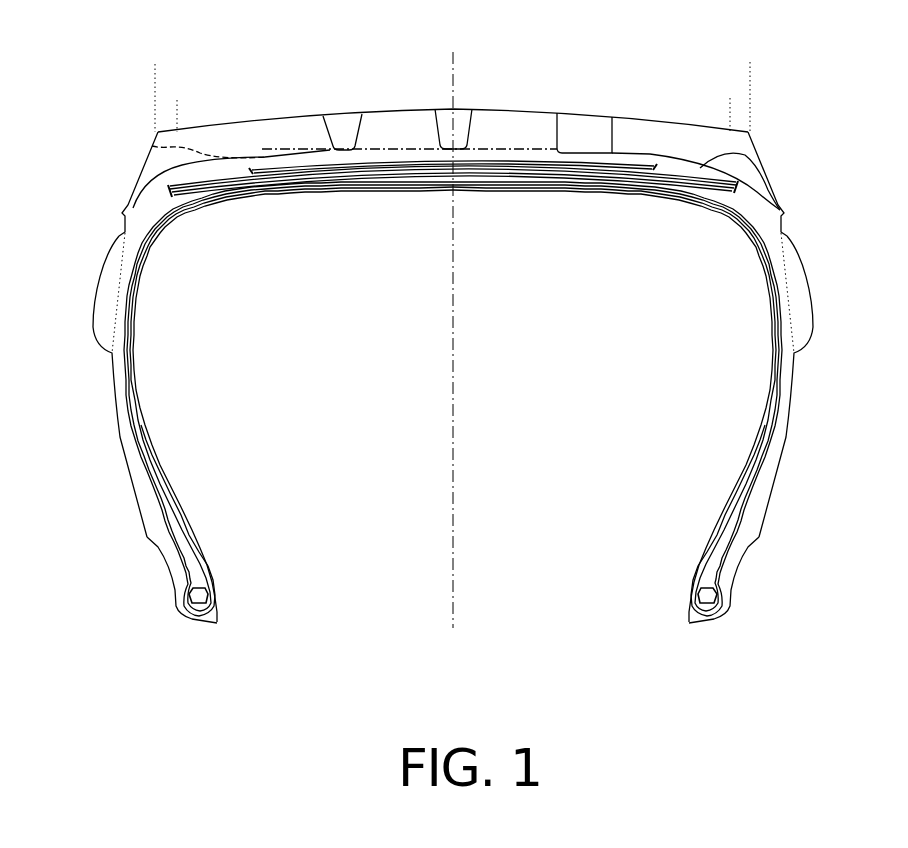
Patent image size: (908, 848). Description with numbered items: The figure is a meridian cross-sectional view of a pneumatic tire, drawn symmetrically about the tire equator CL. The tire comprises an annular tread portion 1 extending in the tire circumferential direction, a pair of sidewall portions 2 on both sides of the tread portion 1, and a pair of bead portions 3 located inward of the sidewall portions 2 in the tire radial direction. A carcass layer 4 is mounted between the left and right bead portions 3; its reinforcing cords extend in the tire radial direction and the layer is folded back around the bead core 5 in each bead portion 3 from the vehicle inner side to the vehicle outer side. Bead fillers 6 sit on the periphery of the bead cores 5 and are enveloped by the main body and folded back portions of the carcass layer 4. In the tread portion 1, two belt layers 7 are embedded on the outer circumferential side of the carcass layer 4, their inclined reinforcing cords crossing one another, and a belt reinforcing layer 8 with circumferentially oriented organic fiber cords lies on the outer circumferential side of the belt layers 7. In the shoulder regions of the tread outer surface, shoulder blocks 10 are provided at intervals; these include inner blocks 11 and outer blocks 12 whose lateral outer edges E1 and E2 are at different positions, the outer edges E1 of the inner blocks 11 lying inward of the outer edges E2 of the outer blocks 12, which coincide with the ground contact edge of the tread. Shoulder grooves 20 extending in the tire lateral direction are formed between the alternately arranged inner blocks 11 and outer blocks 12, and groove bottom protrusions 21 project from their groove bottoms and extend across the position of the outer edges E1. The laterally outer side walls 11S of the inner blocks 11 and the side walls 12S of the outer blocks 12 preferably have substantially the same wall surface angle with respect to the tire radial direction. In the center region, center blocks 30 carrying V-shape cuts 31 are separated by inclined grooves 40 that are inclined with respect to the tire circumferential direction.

The tread portion 1 is at (455, 324).
The sidewall portions 2 is at (802, 373).
The bead portions 3 is at (738, 599).
The carcass layer 4 is at (741, 212).
The bead core 5 is at (708, 593).
The bead fillers 6 is at (722, 536).
The belt layers 7 is at (537, 168).
The belt reinforcing layer 8 is at (652, 170).
The shoulder blocks 10 is at (486, 151).
The inner blocks 11 is at (690, 118).
The outer blocks 12 is at (748, 120).
The side walls of the inner blocks 11S is at (768, 163).
The side walls of the outer blocks 12S is at (780, 184).
The shoulder grooves 20 is at (455, 129).
The groove bottom protrusions 21 is at (748, 153).
The center blocks 30 is at (500, 110).
The V-shape cuts 31 is at (560, 114).
The inclined grooves 40 is at (462, 117).
The outer edges of the inner blocks E1 is at (454, 103).
The outer edges of the outer blocks E2 is at (450, 85).
The tire equator CL is at (454, 329).